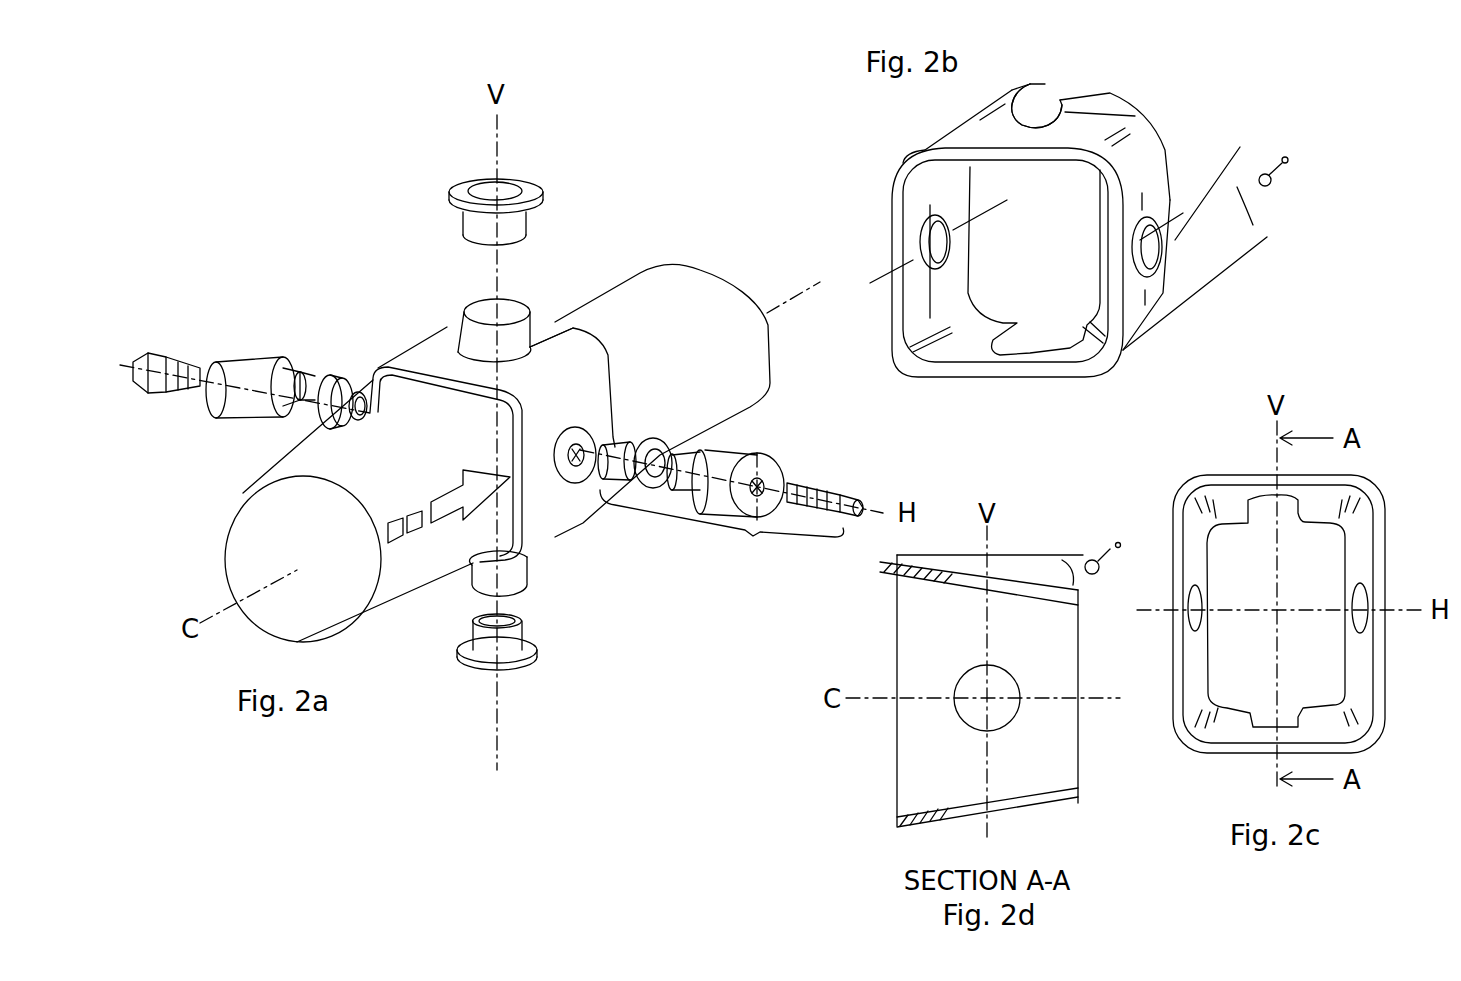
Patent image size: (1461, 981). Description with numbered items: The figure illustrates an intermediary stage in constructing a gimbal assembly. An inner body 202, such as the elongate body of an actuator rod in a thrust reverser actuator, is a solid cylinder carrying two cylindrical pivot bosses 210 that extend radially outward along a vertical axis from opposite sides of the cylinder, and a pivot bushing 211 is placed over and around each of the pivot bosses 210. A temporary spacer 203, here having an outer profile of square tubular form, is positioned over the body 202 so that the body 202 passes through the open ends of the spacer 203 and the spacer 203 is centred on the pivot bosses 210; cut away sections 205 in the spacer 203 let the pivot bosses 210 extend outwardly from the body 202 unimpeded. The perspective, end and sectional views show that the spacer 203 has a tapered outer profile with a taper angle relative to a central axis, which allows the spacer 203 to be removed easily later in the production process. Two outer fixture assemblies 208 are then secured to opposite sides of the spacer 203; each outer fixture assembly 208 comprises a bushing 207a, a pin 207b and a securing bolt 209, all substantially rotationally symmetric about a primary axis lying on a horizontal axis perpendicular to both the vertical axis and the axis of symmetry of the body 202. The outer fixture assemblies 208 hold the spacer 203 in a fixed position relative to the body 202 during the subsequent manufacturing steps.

In FIG. 2A, the inner body 202 is at (693, 268).
In FIG. 2A, the temporary spacer 203 is at (427, 348).
In FIG. 2B, the temporary spacer 203 is at (1153, 163).
In FIG. 2C, the temporary spacer 203 is at (1223, 503).
In FIG. 2D, the temporary spacer 203 is at (932, 802).
In FIG. 2A, the cut away sections 205 is at (540, 326).
In FIG. 2B, the cut away sections 205 is at (1063, 108).
In FIG. 2C, the cut away sections 205 is at (1282, 512).
In FIG. 2A, the bushing 207a is at (618, 467).
In FIG. 2A, the pin 207b is at (710, 478).
In FIG. 2A, the outer fixture assembly 208 is at (753, 533).
In FIG. 2A, the securing bolt 209 is at (800, 470).
In FIG. 2A, the pivot boss 210 is at (508, 303).
In FIG. 2A, the pivot bushing 211 is at (470, 187).